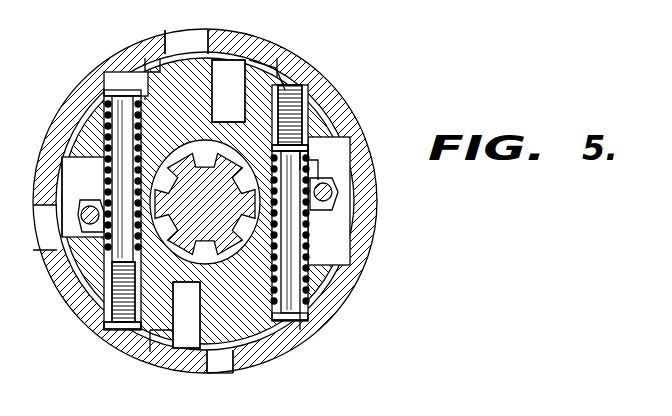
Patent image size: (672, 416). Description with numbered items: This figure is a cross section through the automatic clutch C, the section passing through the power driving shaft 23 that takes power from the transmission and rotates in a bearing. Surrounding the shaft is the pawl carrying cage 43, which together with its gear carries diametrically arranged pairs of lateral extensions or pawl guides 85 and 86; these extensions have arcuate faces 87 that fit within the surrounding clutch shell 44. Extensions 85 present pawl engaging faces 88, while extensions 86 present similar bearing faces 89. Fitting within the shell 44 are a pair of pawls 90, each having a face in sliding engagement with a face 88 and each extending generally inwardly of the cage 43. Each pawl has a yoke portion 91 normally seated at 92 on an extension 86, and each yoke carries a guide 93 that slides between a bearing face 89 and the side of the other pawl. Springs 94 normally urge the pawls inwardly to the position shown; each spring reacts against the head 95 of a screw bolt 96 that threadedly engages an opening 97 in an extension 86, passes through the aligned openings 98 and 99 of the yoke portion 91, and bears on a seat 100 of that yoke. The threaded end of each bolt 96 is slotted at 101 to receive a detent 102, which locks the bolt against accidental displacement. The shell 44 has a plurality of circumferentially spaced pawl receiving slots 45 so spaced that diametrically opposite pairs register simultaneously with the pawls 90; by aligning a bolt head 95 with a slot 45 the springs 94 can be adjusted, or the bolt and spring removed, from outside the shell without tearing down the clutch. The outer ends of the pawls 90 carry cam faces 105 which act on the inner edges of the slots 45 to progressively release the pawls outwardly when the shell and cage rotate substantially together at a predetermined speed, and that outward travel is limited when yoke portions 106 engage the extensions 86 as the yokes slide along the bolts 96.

The power driving shaft 23 is at (246, 160).
The cage 43 is at (144, 334).
The shell 44 is at (260, 52).
The pawl receiving slots 45 is at (200, 38).
The lateral extensions 85 is at (93, 117).
The lateral extensions 86 is at (322, 118).
The arcuate faces 87 is at (157, 350).
The pawl engaging faces 88 is at (150, 62).
The bearing faces 89 is at (277, 70).
The pawls 90 is at (237, 362).
The yoke portion 91 is at (157, 258).
The seat 92 is at (100, 266).
The guide 93 is at (178, 357).
The springs 94 is at (300, 260).
The head 95 is at (297, 357).
The screw bolt 96 is at (312, 160).
The opening 97 is at (310, 117).
The opening 98 is at (310, 147).
The opening 99 is at (330, 200).
The seat 100 is at (318, 168).
The slot 101 is at (117, 297).
The detent 102 is at (127, 313).
The cam faces 105 is at (210, 375).
The yoke portions 106 is at (301, 135).
The clutch C is at (344, 77).